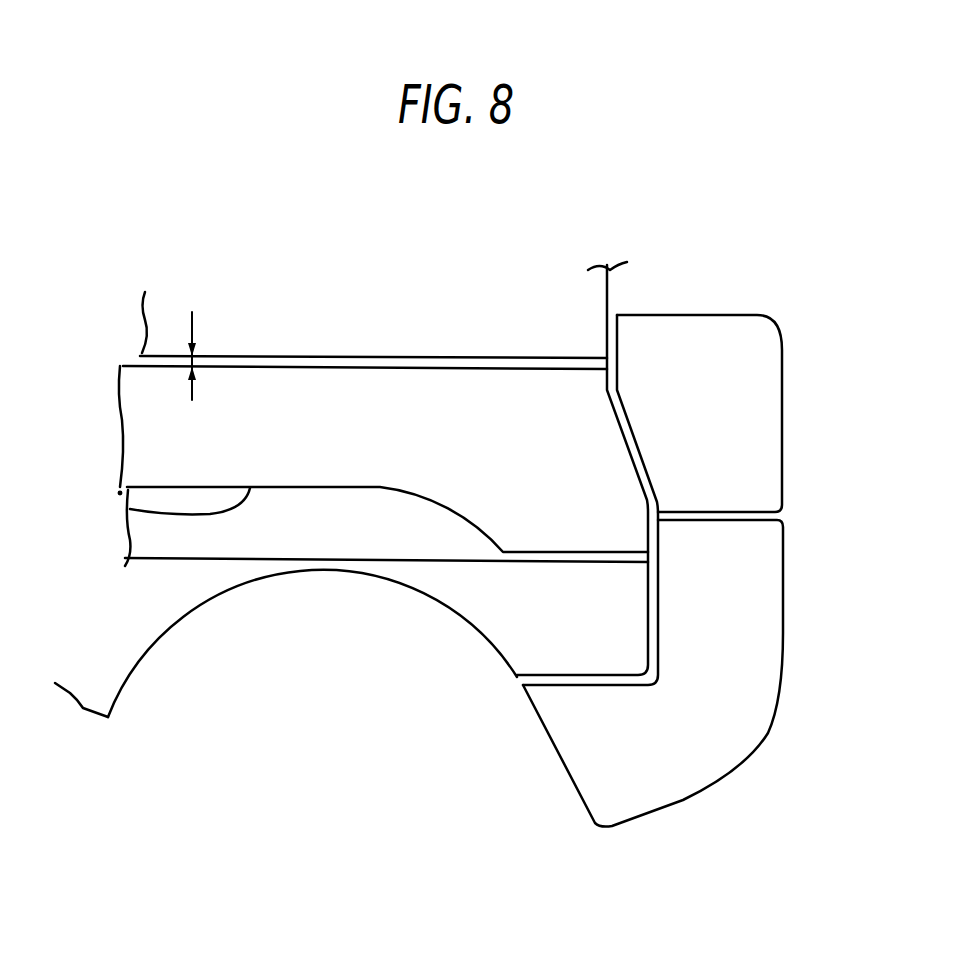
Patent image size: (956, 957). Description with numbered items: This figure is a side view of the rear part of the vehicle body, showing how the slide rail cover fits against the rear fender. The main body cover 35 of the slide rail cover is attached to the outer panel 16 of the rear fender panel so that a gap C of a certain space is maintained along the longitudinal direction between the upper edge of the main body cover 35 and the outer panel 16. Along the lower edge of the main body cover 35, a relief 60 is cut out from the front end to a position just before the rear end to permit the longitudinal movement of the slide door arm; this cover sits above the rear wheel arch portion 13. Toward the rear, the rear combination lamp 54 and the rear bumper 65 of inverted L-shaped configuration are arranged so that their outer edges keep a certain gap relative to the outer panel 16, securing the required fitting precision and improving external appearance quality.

The outer panel 16 is at (510, 307).
The main body cover 35 is at (178, 421).
The relief 60 is at (133, 509).
The rear wheel arch portion 13 is at (155, 648).
The rear combination lamp 54 is at (742, 373).
The rear bumper 65 is at (742, 585).
The gap C is at (203, 353).